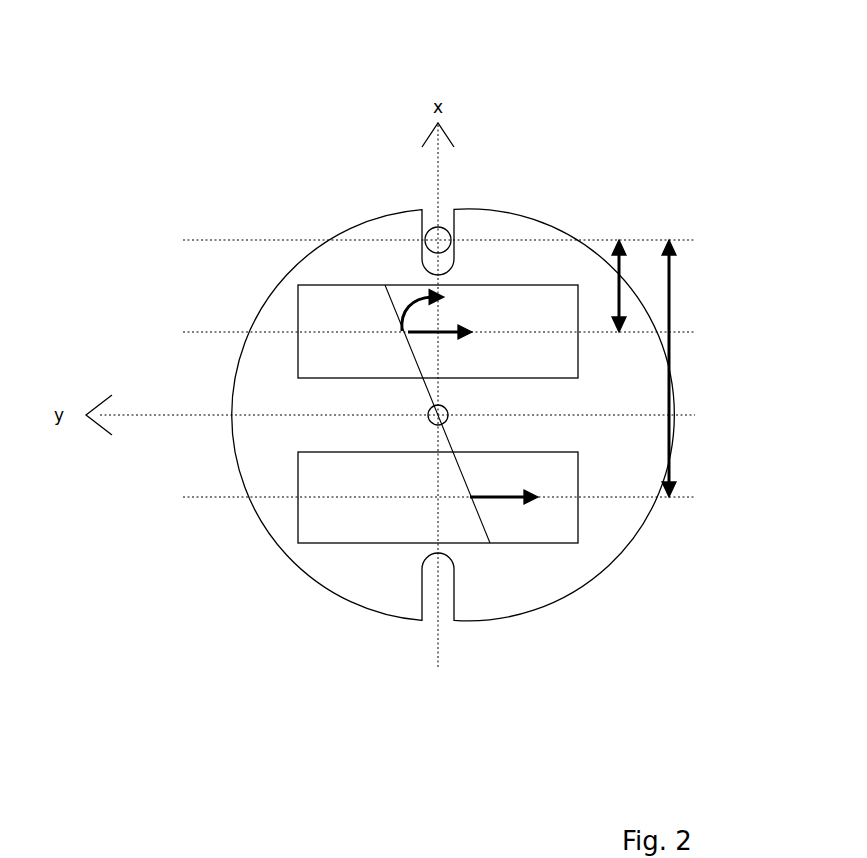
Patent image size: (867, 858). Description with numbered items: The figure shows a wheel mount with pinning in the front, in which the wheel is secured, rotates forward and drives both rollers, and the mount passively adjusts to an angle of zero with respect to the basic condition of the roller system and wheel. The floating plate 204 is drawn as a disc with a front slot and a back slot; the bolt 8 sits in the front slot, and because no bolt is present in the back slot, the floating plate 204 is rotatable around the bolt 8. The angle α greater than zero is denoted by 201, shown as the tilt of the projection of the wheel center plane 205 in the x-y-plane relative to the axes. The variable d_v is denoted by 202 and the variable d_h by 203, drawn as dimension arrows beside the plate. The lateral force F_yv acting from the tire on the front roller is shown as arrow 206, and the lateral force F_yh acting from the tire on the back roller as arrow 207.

The bolt 8 is at (439, 245).
The angle α 201 is at (421, 322).
The variable d_v 202 is at (649, 172).
The variable d_h 203 is at (715, 255).
The floating plate 204 is at (386, 262).
The projection of the wheel center plane 205 is at (432, 398).
The lateral force F_yv 206 is at (447, 328).
The lateral force F_yh 207 is at (502, 500).